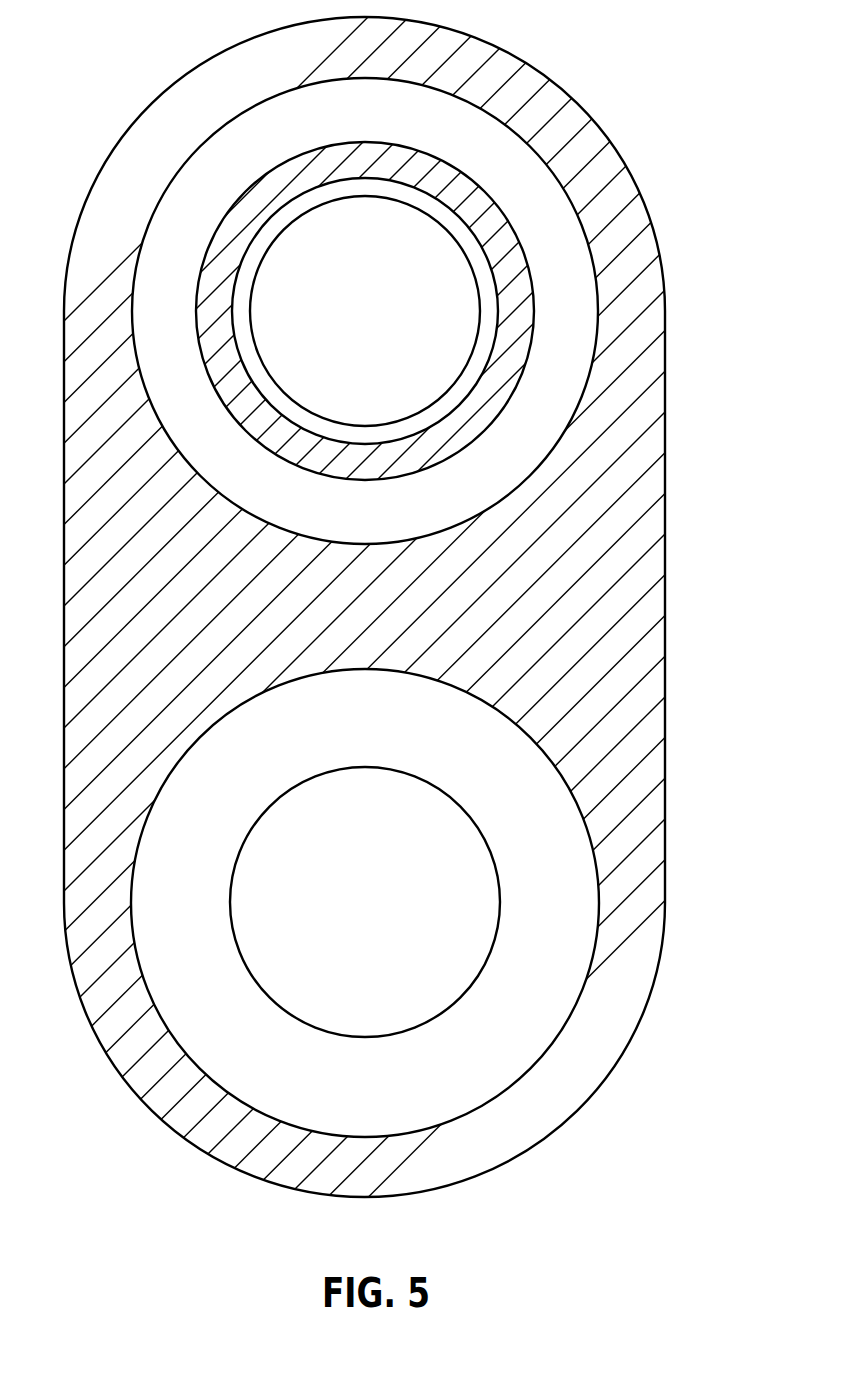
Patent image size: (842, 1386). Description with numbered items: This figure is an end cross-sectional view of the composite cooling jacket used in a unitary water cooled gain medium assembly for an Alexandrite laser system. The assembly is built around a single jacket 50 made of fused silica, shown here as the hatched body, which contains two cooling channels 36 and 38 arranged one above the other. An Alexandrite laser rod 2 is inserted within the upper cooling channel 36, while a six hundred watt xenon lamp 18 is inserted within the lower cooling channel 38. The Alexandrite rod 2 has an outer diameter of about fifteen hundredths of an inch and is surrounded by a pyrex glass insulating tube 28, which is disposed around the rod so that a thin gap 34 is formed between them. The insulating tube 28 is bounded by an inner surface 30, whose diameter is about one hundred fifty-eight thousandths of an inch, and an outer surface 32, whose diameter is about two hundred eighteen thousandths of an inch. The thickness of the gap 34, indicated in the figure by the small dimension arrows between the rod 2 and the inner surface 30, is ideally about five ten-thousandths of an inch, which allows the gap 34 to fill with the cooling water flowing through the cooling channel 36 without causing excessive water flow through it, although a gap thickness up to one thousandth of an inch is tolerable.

The Alexandrite laser rod 2 is at (357, 323).
The xenon lamp 18 is at (352, 917).
The insulating tube 28 is at (503, 247).
The inner surface 30 is at (498, 305).
The outer surface 32 is at (495, 198).
The gap 34 is at (361, 470).
The cooling channel 36 is at (177, 330).
The cooling channel 38 is at (204, 948).
The jacket 50 is at (655, 527).